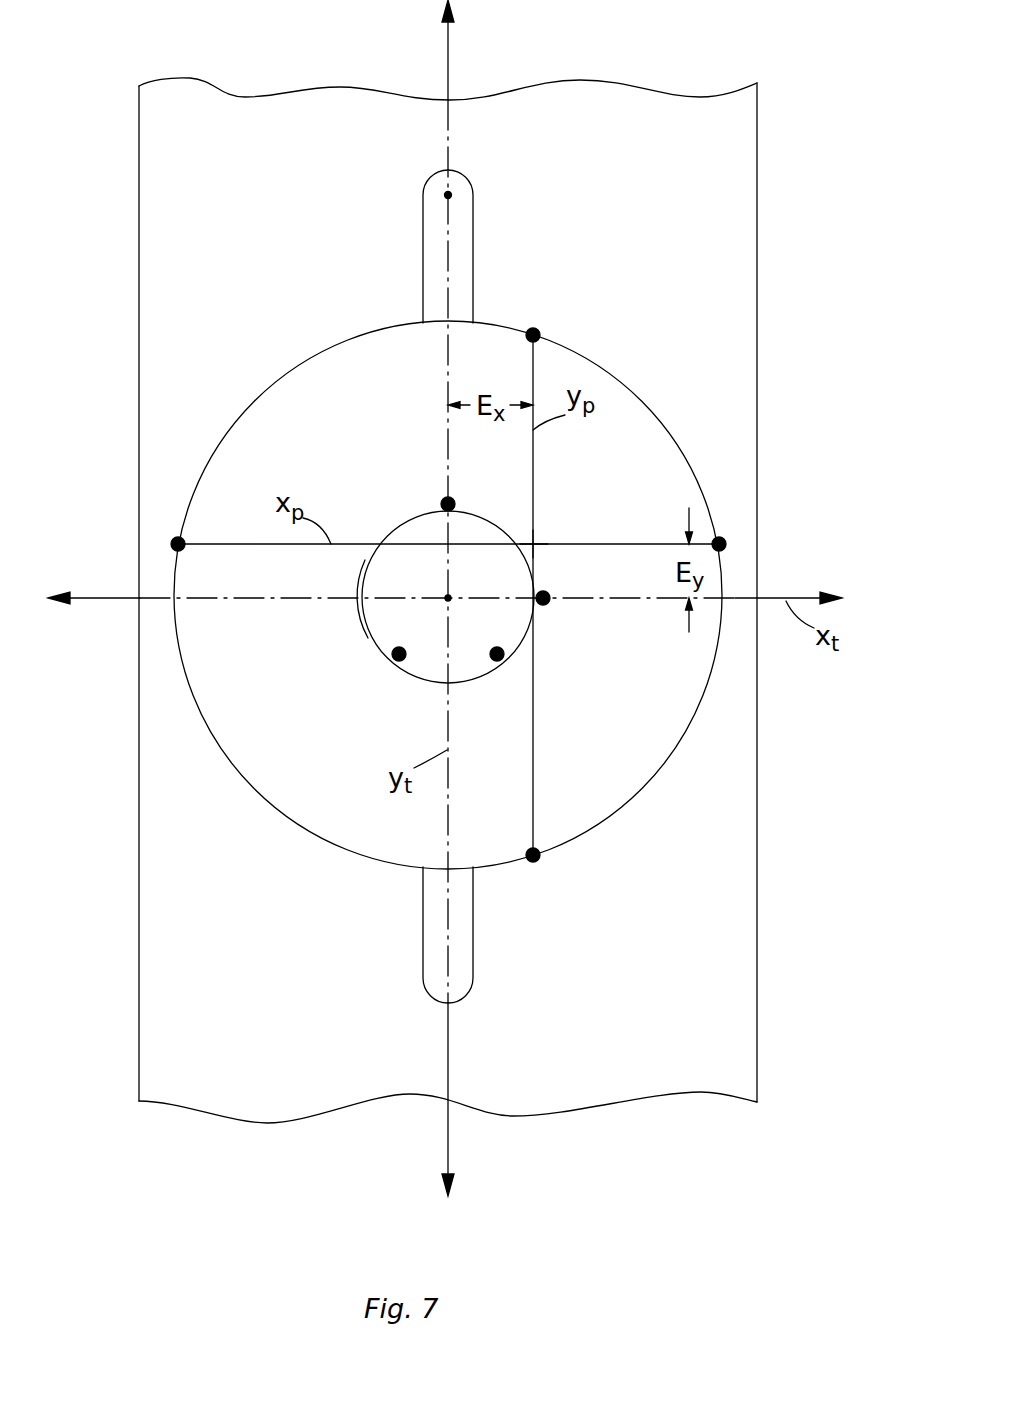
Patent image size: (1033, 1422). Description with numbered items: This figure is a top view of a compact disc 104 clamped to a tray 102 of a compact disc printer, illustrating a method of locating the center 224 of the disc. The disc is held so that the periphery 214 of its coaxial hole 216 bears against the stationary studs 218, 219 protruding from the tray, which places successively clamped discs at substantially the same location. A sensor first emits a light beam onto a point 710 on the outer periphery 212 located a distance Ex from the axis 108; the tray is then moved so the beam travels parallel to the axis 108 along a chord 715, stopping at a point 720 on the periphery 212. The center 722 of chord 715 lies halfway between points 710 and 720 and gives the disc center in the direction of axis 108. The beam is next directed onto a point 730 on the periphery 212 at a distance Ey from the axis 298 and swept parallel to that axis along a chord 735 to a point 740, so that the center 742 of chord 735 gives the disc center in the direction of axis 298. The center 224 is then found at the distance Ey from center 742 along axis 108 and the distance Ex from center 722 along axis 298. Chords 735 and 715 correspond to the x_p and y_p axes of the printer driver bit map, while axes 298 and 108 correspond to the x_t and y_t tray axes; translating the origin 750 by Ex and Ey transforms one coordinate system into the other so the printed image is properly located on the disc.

The tray 102 is at (230, 241).
The compact disc 104 is at (448, 586).
The axis 108 is at (450, 50).
The outer periphery 212 is at (639, 399).
The periphery of coaxial hole 214 is at (365, 616).
The coaxial hole 216 is at (398, 581).
The stationary stud 218 is at (395, 660).
The stationary stud 219 is at (501, 660).
The center 224 is at (453, 597).
The axis 298 is at (810, 598).
The point 710 is at (540, 333).
The chord 715 is at (533, 475).
The point 720 is at (538, 860).
The center of chord 722 is at (548, 604).
The point 730 is at (725, 541).
The chord 735 is at (272, 544).
The point 740 is at (173, 540).
The center of chord 742 is at (444, 500).
The origin 750 is at (533, 543).